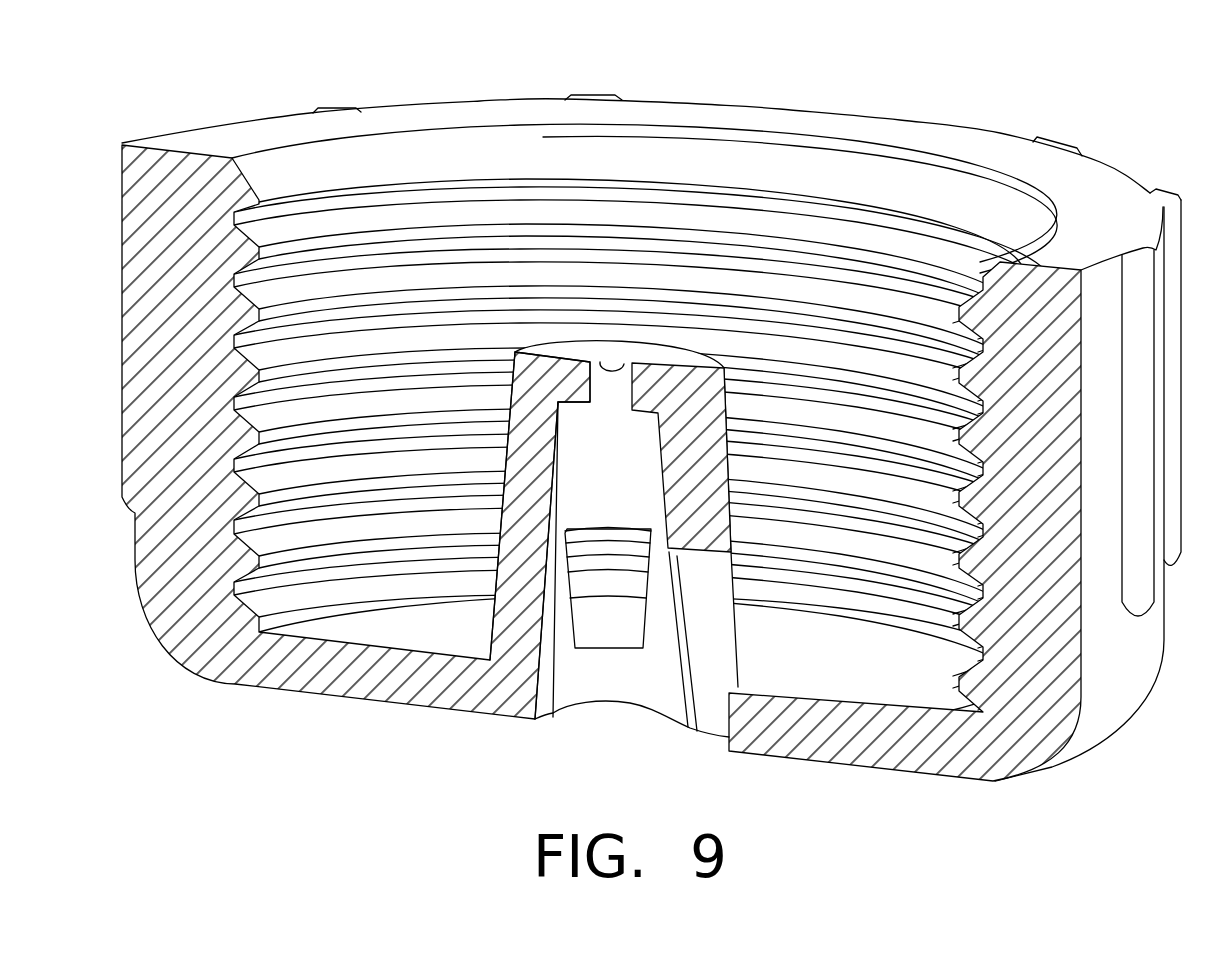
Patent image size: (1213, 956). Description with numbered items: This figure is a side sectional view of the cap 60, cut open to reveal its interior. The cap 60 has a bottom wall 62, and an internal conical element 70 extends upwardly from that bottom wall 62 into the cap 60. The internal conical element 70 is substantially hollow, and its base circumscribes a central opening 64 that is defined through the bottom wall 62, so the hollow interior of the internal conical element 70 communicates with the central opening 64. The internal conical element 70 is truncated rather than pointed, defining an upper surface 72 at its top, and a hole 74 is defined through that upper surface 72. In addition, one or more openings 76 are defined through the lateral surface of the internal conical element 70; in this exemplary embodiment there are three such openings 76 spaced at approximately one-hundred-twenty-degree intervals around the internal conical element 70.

The cap 60 is at (1118, 188).
The bottom wall 62 is at (346, 693).
The central opening 64 is at (573, 710).
The internal conical element 70 is at (722, 525).
The upper surface 72 is at (555, 348).
The hole 74 is at (628, 358).
The openings 76 is at (574, 628).